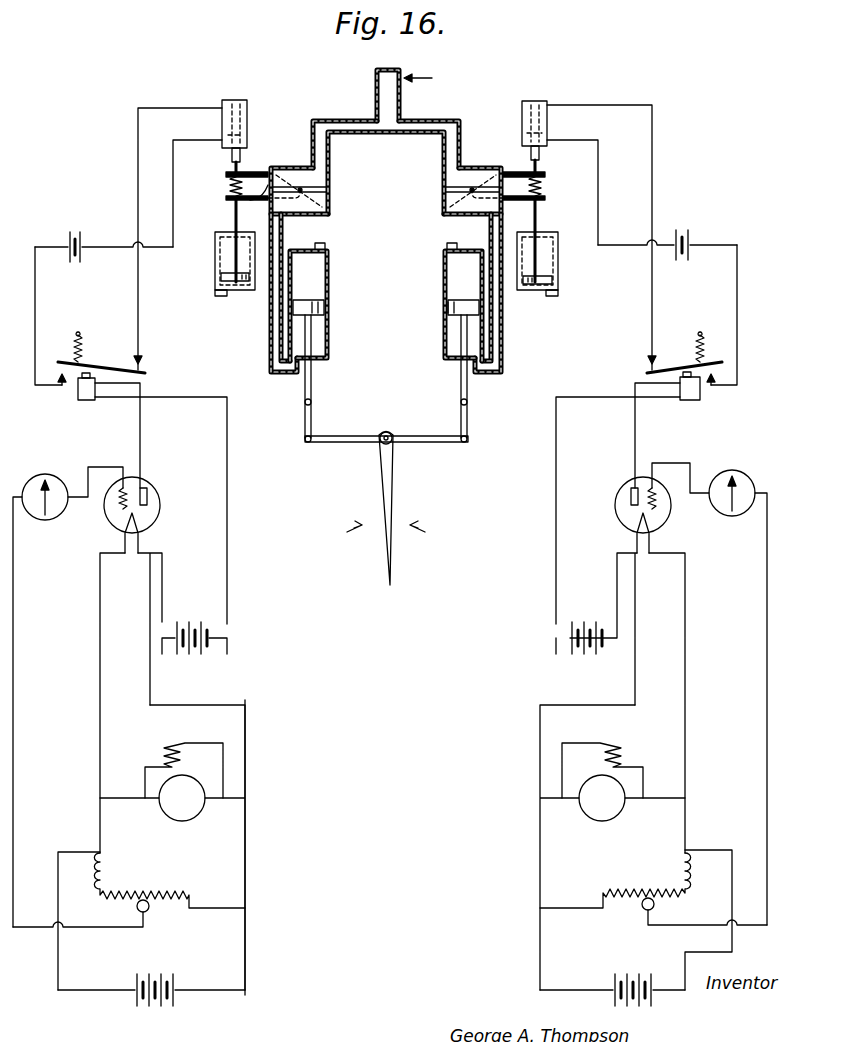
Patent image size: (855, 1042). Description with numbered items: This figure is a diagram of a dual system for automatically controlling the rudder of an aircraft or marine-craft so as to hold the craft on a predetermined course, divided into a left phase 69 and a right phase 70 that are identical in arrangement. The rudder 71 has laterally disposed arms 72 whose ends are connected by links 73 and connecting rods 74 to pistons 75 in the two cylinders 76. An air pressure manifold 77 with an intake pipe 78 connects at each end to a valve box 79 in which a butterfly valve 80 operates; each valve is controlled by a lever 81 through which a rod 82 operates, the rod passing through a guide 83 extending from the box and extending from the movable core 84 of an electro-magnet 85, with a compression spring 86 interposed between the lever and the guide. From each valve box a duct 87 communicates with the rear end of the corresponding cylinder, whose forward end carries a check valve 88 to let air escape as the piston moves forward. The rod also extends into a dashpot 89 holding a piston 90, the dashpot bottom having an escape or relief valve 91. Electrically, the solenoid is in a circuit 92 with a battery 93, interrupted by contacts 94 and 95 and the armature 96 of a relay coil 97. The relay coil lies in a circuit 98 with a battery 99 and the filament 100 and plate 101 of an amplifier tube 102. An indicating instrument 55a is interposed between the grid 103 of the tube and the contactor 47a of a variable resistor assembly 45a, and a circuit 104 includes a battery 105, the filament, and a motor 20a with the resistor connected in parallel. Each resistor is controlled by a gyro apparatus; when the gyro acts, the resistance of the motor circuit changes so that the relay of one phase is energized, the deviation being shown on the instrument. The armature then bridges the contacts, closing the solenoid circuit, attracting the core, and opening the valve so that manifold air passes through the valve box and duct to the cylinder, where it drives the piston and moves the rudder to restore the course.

The left phase 69 is at (226, 697).
The right phase 70 is at (552, 660).
The rudder 71 is at (386, 484).
The laterally disposed arms 72 is at (326, 443).
The links 73 is at (313, 414).
The connecting rods 74 is at (312, 379).
The pistons 75 is at (330, 303).
The cylinders 76 is at (330, 268).
The air pressure manifold 77 is at (399, 138).
The intake pipe 78 is at (374, 79).
The valve box 79 is at (287, 163).
The butterfly valve 80 is at (318, 180).
The lever 81 is at (236, 210).
The rod 82 is at (228, 200).
The guide 83 is at (250, 190).
The movable core 84 is at (232, 153).
The electro-magnet 85 is at (236, 108).
The compression spring 86 is at (229, 184).
The duct 87 is at (266, 318).
The check valve 88 is at (322, 245).
The dashpot 89 is at (215, 258).
The piston 90 is at (228, 280).
The escape or relief valve 91 is at (216, 294).
The circuit 92 is at (137, 200).
The battery 93 is at (75, 228).
The contact 94 is at (144, 373).
The contact 95 is at (52, 374).
The armature 96 is at (104, 364).
The relay coil 97 is at (78, 392).
The circuit 98 is at (227, 454).
The battery 99 is at (194, 622).
The filament 100 is at (144, 542).
The plate 101 is at (150, 495).
The amplifier tube 102 is at (112, 532).
The grid 103 is at (118, 507).
The circuit 104 is at (248, 849).
The battery 105 is at (165, 1008).
The motor 20a is at (165, 818).
The variable resistor assembly 45a is at (154, 892).
The contactor 47a is at (151, 914).
The indicating instrument 55a is at (55, 477).